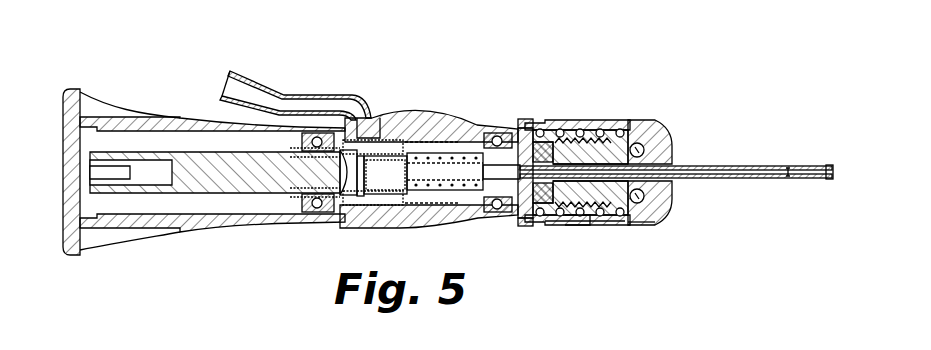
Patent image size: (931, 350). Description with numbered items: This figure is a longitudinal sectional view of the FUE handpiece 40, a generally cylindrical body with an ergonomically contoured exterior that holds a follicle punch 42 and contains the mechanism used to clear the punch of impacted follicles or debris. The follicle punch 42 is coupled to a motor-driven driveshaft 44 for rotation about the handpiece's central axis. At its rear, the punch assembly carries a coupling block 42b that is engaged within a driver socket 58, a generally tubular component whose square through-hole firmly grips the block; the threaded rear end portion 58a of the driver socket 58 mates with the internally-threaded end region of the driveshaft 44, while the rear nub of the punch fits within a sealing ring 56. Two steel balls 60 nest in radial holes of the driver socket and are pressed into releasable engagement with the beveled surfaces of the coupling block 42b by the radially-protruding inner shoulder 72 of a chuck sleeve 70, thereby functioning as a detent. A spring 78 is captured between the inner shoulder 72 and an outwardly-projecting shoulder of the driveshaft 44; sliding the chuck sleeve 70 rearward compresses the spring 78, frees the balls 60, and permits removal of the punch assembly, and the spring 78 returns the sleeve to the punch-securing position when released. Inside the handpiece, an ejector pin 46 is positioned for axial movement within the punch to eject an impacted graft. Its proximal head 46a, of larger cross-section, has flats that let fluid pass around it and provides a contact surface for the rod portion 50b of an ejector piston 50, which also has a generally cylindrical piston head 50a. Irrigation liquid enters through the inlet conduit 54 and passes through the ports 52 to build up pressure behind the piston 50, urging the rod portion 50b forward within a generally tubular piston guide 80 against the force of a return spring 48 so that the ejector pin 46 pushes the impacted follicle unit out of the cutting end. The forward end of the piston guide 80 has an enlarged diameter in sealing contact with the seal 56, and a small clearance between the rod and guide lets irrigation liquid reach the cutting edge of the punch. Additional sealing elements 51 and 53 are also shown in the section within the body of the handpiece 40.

The FUE handpiece 40 is at (309, 40).
The follicle punch 42 is at (752, 167).
The coupling block 42b is at (570, 140).
The driveshaft 44 is at (200, 165).
The ejector pin 46 is at (516, 130).
The head 46a is at (512, 136).
The return spring 48 is at (460, 195).
The ejector piston 50 is at (393, 155).
The piston head 50a is at (391, 173).
The rod portion 50b is at (445, 136).
The O-ring seal 51 is at (350, 198).
The ports 52 is at (378, 194).
The collar 53 is at (387, 194).
The inlet conduit 54 is at (245, 92).
The sealing ring 56 is at (540, 120).
The driver socket 58 is at (668, 152).
The threaded rear end portion 58a is at (576, 225).
The steel balls 60 is at (642, 144).
The chuck sleeve 70 is at (608, 118).
The inner shoulder 72 is at (645, 222).
The spring 78 is at (594, 222).
The piston guide 80 is at (527, 225).